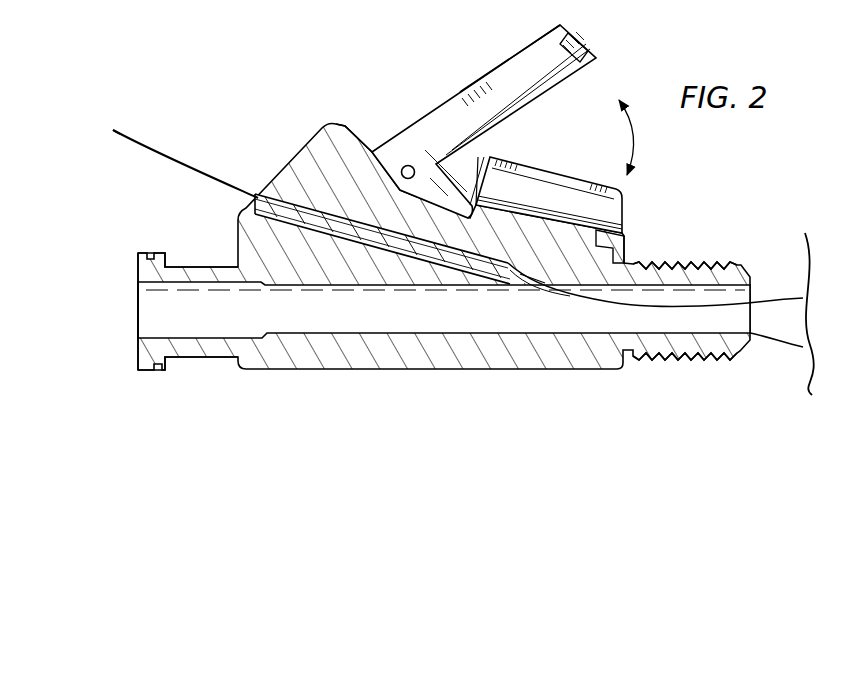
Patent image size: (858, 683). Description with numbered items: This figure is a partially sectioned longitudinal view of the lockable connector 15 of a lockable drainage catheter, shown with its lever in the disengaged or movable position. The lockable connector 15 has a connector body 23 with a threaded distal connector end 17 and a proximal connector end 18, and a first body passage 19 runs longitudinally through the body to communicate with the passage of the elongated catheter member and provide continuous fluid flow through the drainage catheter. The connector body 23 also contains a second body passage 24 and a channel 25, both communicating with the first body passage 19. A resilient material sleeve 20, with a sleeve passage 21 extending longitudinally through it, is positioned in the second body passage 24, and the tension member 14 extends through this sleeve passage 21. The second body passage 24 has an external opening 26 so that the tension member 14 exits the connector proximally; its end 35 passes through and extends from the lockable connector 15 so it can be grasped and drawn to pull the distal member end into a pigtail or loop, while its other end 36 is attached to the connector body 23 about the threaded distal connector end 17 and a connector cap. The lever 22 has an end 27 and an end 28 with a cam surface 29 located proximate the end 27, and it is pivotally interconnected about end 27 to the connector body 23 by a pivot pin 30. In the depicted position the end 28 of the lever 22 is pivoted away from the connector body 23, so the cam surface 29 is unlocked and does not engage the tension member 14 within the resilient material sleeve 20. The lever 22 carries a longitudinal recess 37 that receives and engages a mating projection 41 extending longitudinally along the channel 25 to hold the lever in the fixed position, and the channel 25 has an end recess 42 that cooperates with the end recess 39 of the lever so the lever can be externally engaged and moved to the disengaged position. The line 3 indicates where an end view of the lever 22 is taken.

The line 3— 3 is at (628, 0).
The tension member 14 is at (167, 166).
The lockable connector 15 is at (266, 103).
The distal connector end 17 is at (701, 257).
The proximal connector end 18 is at (171, 374).
The first body passage 19 is at (150, 328).
The resilient material sleeve 20 is at (297, 205).
The sleeve passage 21 is at (272, 190).
The lever 22 is at (430, 110).
The connector body 23 is at (318, 160).
The second body passage 24 is at (288, 228).
The channel 25 is at (469, 161).
The external opening 26 is at (243, 202).
The end 27 is at (341, 150).
The end 28 is at (582, 42).
The cam surface 29 is at (434, 220).
The pivot pin 30 is at (408, 165).
The end 35 is at (127, 150).
The end 36 is at (716, 363).
The longitudinal recess 37 is at (528, 51).
The end recess 39 is at (589, 68).
The projection 41 is at (614, 190).
The end recess 42 is at (626, 238).